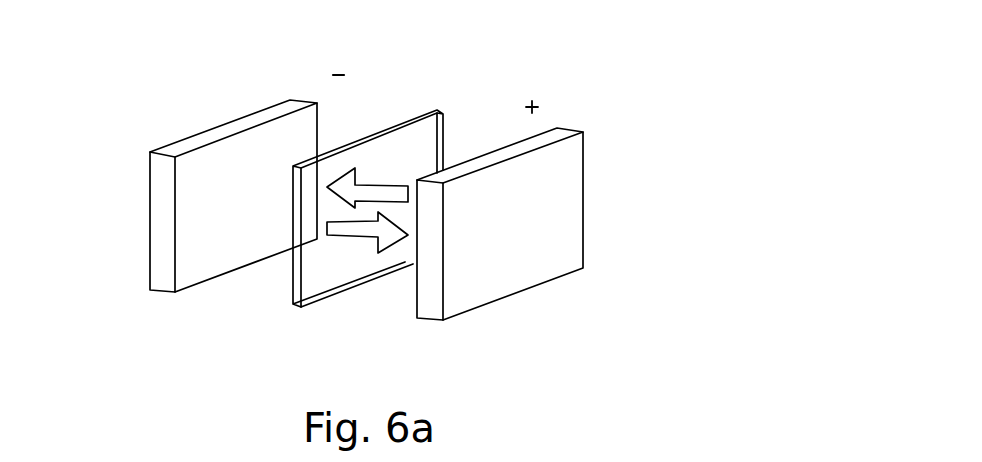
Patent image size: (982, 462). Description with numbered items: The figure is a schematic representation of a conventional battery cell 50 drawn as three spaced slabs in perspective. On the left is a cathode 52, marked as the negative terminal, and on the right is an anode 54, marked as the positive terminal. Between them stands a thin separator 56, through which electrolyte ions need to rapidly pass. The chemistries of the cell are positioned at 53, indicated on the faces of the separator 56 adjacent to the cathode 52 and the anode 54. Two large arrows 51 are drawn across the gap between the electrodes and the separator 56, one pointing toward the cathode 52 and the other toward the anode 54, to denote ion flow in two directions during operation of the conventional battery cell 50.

The conventional battery cell 50 is at (648, 113).
The large arrows 51 is at (239, 228).
The cathode 52 is at (162, 212).
The chemistries 53 is at (276, 279).
The anode 54 is at (567, 240).
The separator 56 is at (403, 150).